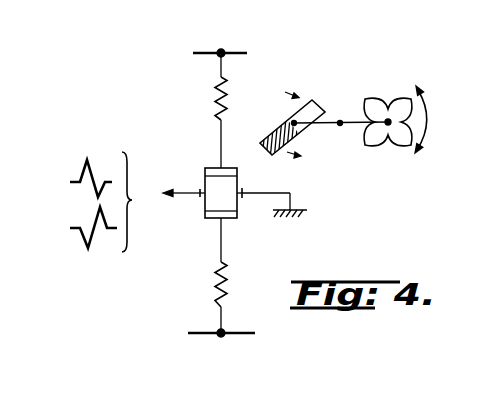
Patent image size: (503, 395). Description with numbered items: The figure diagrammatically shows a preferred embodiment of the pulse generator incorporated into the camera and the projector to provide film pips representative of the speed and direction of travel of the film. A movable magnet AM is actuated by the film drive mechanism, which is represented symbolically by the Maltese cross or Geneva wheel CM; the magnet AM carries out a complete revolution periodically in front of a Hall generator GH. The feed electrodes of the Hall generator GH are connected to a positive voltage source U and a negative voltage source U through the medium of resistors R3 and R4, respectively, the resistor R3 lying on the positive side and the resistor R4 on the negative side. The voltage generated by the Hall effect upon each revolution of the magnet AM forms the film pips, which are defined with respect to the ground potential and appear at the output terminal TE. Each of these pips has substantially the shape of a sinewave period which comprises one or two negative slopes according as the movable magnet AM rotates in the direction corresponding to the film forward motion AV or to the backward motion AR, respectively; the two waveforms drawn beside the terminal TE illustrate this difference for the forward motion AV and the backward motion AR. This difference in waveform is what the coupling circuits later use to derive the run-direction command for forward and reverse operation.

The resistor R3 is at (226, 107).
The resistor R4 is at (226, 291).
The Hall generator GH is at (237, 218).
The output terminal TE is at (141, 202).
The film forward motion AV is at (245, 132).
The film backward motion AR is at (247, 167).
The movable magnet AM is at (317, 100).
The Maltese cross CM is at (382, 100).
The voltage source U is at (221, 192).